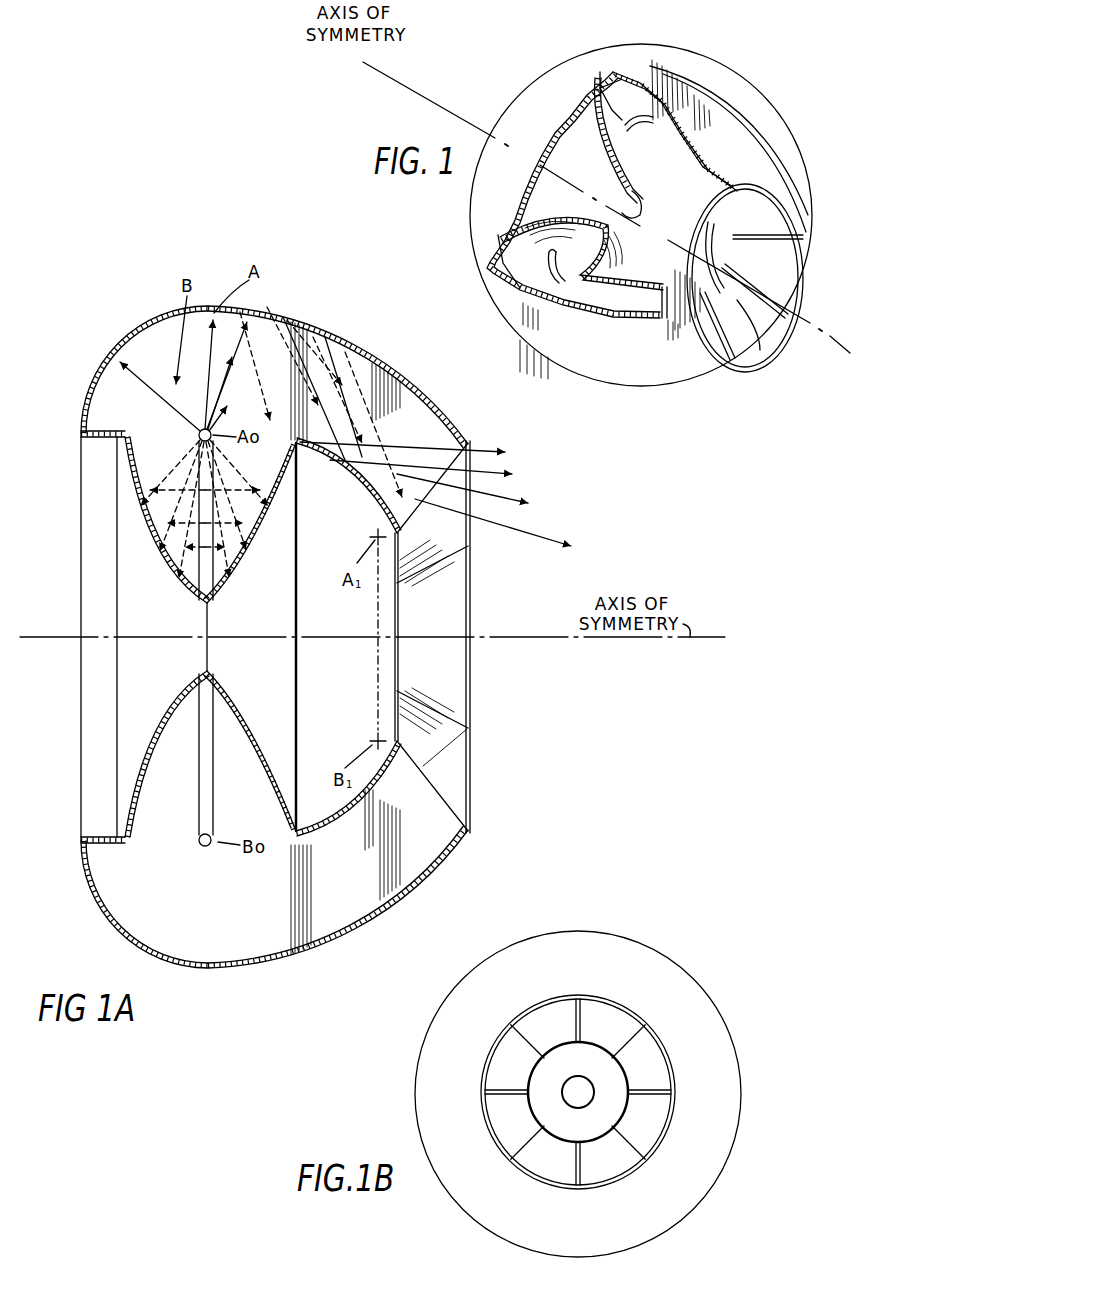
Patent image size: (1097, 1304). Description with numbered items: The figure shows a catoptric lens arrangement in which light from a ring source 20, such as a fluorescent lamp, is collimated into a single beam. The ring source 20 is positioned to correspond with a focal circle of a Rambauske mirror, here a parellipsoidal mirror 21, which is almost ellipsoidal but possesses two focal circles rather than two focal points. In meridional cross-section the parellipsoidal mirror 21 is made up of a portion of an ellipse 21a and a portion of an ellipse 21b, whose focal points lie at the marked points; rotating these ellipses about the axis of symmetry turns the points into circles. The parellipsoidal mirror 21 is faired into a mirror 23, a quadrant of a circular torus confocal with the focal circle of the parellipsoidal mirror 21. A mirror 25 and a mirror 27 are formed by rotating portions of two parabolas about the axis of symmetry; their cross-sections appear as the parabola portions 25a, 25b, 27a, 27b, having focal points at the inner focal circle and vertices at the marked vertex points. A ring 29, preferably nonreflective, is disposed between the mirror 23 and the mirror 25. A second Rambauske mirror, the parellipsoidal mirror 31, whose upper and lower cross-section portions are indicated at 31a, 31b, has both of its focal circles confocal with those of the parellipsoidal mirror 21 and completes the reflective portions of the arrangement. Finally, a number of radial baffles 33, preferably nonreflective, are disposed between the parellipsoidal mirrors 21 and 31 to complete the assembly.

In FIG. 1, the ring source of light 20 is at (547, 262).
In FIG. 1A, the ring source of light 20 is at (198, 788).
In FIG. 1, the parellipsoidal mirror 21 is at (745, 97).
In FIG. 1B, the parellipsoidal mirror 21 is at (690, 1205).
In FIG. 1A, the portion of an ellipse 21a is at (355, 345).
In FIG. 1A, the portion of an ellipse 21b is at (371, 920).
In FIG. 1, the mirror 23 is at (625, 50).
In FIG. 1A, the mirror 23 is at (119, 340).
In FIG. 1, the mirror 25 is at (545, 220).
In FIG. 1A, the portion of a parabola 25a is at (175, 563).
In FIG. 1A, the portion of a parabola 25b is at (167, 718).
In FIG. 1, the mirror 27 is at (607, 243).
In FIG. 1A, the portion of a parabola 27a is at (273, 503).
In FIG. 1A, the portion of a parabola 27b is at (253, 730).
In FIG. 1, the ring 29 is at (597, 90).
In FIG. 1A, the ring 29 is at (96, 442).
In FIG. 1, the parellipsoidal mirror 31 is at (687, 185).
In FIG. 1B, the parellipsoidal mirror 31 is at (657, 1071).
In FIG. 1A, the upper output reflector 31a is at (340, 473).
In FIG. 1A, the lower output reflector 31b is at (313, 818).
In FIG. 1, the radial baffles 33 is at (740, 340).
In FIG. 1A, the radial baffles 33 is at (458, 450).
In FIG. 1B, the radial baffles 33 is at (580, 1018).